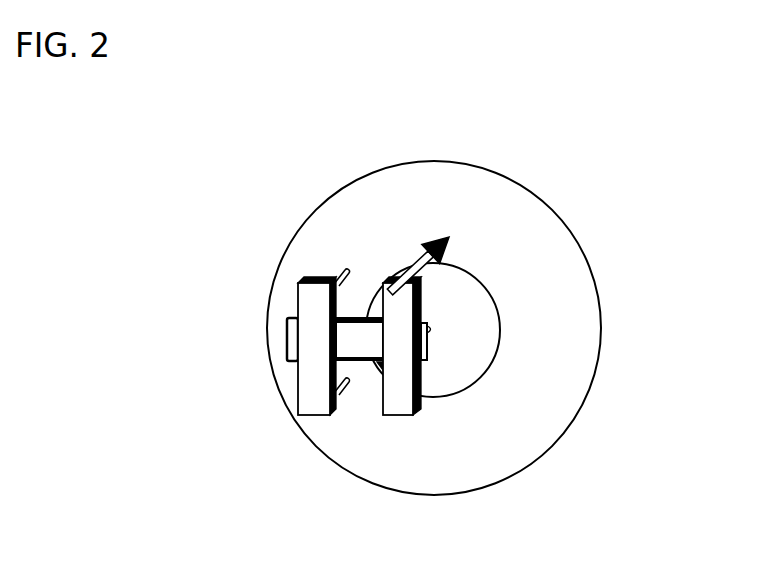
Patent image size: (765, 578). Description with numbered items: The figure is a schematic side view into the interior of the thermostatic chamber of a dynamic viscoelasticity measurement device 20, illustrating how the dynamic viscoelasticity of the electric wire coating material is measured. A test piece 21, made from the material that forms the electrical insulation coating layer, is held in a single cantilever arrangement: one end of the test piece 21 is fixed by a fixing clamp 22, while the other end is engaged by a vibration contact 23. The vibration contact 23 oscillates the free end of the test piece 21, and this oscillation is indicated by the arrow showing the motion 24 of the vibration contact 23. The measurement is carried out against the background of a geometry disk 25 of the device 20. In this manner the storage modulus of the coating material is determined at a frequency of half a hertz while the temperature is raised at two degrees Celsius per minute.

The light source unit 20 is at (263, 220).
The shaft 21 is at (293, 342).
The first flange 22 is at (308, 397).
The second flange 23 is at (397, 402).
The rotation direction arrow 24 is at (426, 257).
The outer circle (housing) 25 is at (583, 315).